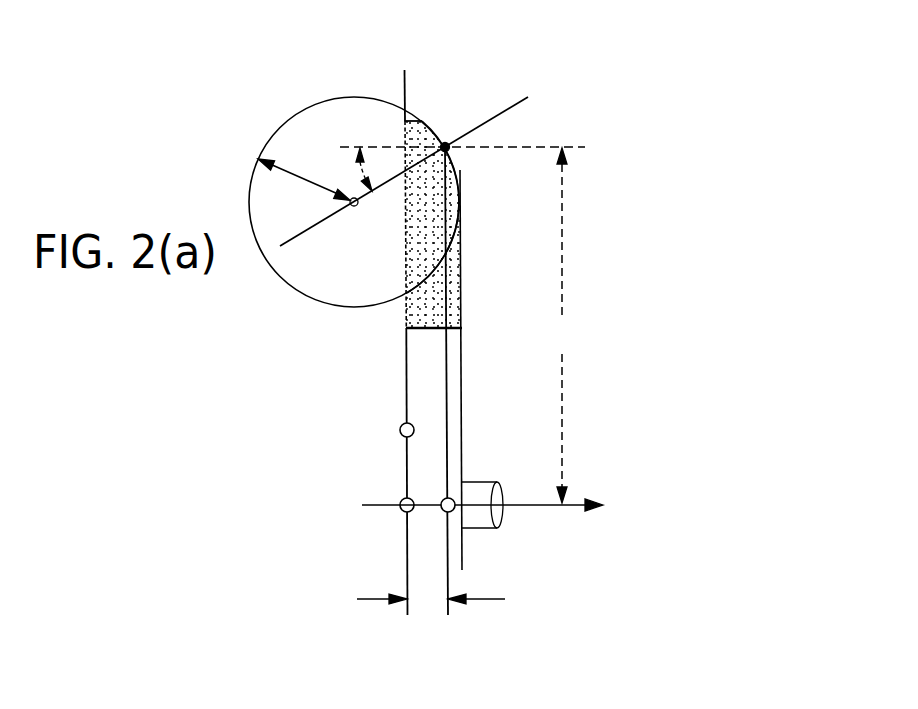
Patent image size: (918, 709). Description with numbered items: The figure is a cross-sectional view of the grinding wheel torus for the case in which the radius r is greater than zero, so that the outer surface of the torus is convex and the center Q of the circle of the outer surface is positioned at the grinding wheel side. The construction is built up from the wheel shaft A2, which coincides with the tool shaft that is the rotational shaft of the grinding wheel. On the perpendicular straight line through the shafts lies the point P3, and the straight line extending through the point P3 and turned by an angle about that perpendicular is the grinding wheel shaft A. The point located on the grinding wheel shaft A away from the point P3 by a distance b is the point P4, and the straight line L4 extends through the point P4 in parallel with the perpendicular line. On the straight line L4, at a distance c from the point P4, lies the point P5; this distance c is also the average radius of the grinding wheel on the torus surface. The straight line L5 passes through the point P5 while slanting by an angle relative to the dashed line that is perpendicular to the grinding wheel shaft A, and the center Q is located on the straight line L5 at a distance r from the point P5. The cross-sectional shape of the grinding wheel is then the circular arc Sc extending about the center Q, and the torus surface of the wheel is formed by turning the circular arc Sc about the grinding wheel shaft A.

The point P5 is at (445, 147).
The straight line L5 is at (515, 97).
The circular arc S_C Sc is at (458, 173).
The radius of circular arc S_C r is at (304, 168).
The center of circular arc Q is at (356, 206).
The straight line L4 is at (448, 310).
The distance c is at (559, 325).
The wheel shaft A2 is at (400, 427).
The point P3 is at (400, 502).
The point P4 is at (453, 510).
The grinding wheel shaft A is at (547, 505).
The distance b is at (431, 596).